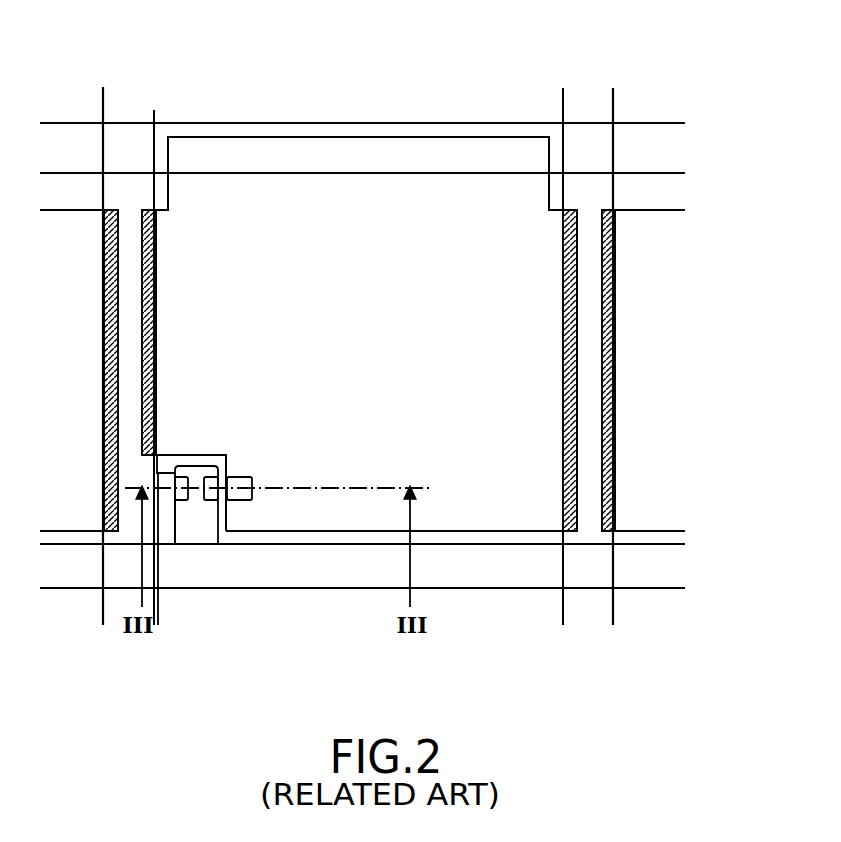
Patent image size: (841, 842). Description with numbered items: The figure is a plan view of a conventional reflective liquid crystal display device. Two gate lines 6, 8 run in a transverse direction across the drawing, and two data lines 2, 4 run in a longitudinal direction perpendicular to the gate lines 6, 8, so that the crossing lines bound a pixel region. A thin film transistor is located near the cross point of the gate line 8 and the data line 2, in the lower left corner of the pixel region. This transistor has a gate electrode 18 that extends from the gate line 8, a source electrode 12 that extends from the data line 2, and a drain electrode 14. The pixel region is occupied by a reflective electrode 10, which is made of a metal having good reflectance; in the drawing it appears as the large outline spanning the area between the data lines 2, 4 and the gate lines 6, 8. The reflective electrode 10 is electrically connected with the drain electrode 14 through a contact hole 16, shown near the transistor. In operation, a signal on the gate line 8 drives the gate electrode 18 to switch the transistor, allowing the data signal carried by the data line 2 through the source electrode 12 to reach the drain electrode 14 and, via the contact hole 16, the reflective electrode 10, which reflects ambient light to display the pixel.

The data line 2 is at (123, 100).
The data line 4 is at (587, 102).
The gate line 6 is at (670, 148).
The gate line 8 is at (667, 568).
The reflective electrode 10 is at (365, 205).
The source electrode 12 is at (160, 510).
The drain electrode 14 is at (215, 503).
The contact hole 16 is at (238, 492).
The gate electrode 18 is at (195, 523).